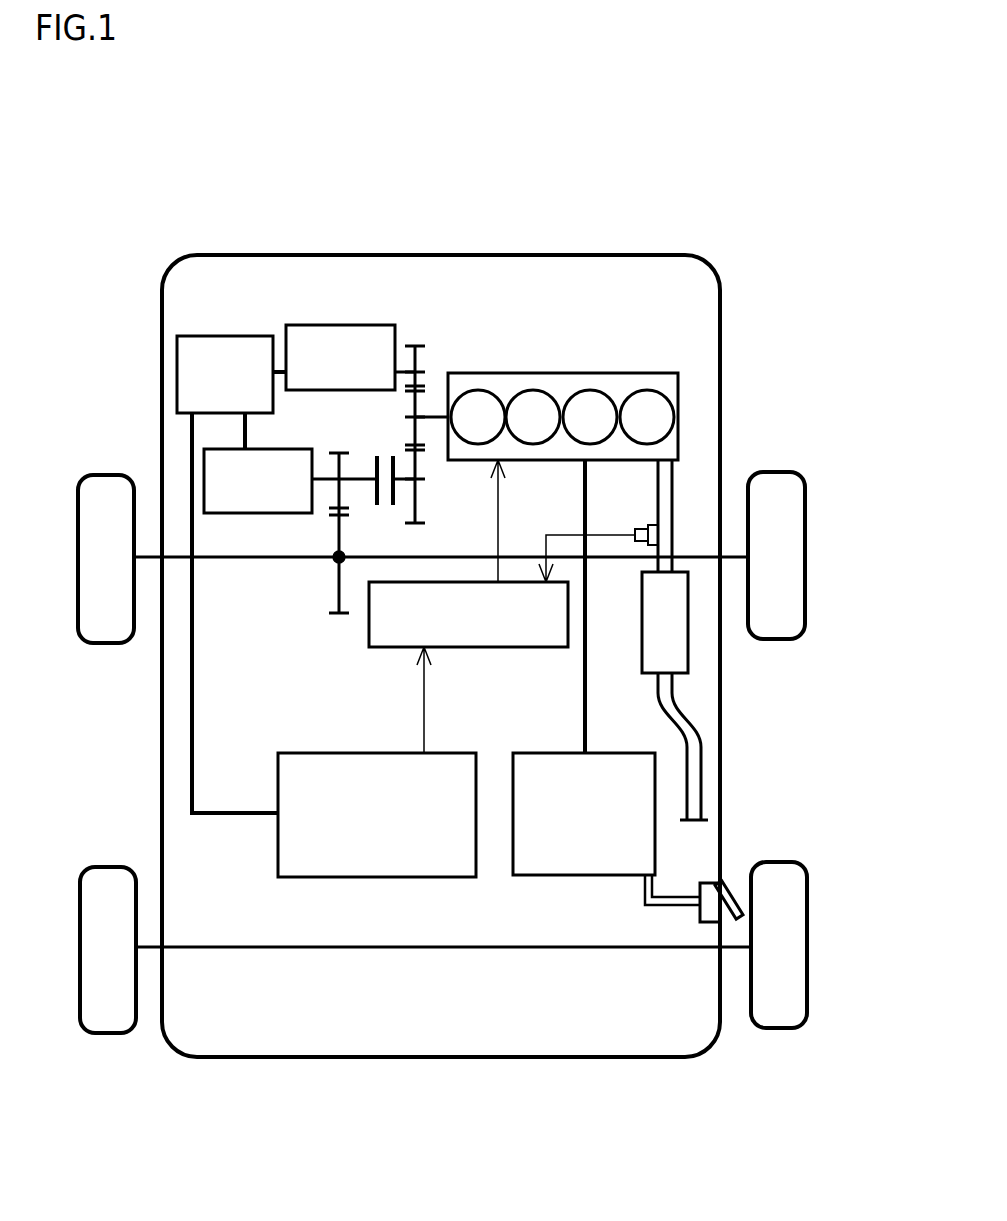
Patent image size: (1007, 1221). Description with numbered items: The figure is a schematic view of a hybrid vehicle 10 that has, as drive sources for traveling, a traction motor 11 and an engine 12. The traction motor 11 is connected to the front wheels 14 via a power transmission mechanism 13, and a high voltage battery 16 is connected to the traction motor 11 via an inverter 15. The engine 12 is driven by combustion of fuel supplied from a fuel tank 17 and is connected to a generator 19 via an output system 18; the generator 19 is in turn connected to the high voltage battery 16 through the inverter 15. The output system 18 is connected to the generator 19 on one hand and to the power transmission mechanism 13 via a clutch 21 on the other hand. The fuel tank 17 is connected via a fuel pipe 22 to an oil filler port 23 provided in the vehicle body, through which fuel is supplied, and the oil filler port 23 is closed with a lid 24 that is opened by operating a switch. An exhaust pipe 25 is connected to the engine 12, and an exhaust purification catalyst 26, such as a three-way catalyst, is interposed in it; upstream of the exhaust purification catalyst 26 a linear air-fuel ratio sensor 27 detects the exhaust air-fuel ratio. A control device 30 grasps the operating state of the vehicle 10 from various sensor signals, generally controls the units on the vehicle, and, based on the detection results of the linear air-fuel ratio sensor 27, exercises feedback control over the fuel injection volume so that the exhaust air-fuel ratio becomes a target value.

The hybrid vehicle 10 is at (648, 207).
The traction motor 11 is at (205, 476).
The engine 12 is at (680, 392).
The power transmission mechanism 13 is at (337, 530).
The front wheels 14 is at (78, 615).
The inverter 15 is at (178, 353).
The high voltage battery 16 is at (290, 855).
The fuel tank 17 is at (643, 853).
The output system 18 is at (418, 403).
The generator 19 is at (313, 327).
The clutch 21 is at (397, 435).
The fuel pipe 22 is at (640, 888).
The oil filler port 23 is at (707, 912).
The lid 24 is at (737, 903).
The exhaust pipe 25 is at (665, 478).
The exhaust purification catalyst 26 is at (683, 657).
The linear air-fuel ratio sensor 27 is at (650, 523).
The control device 30 is at (397, 647).